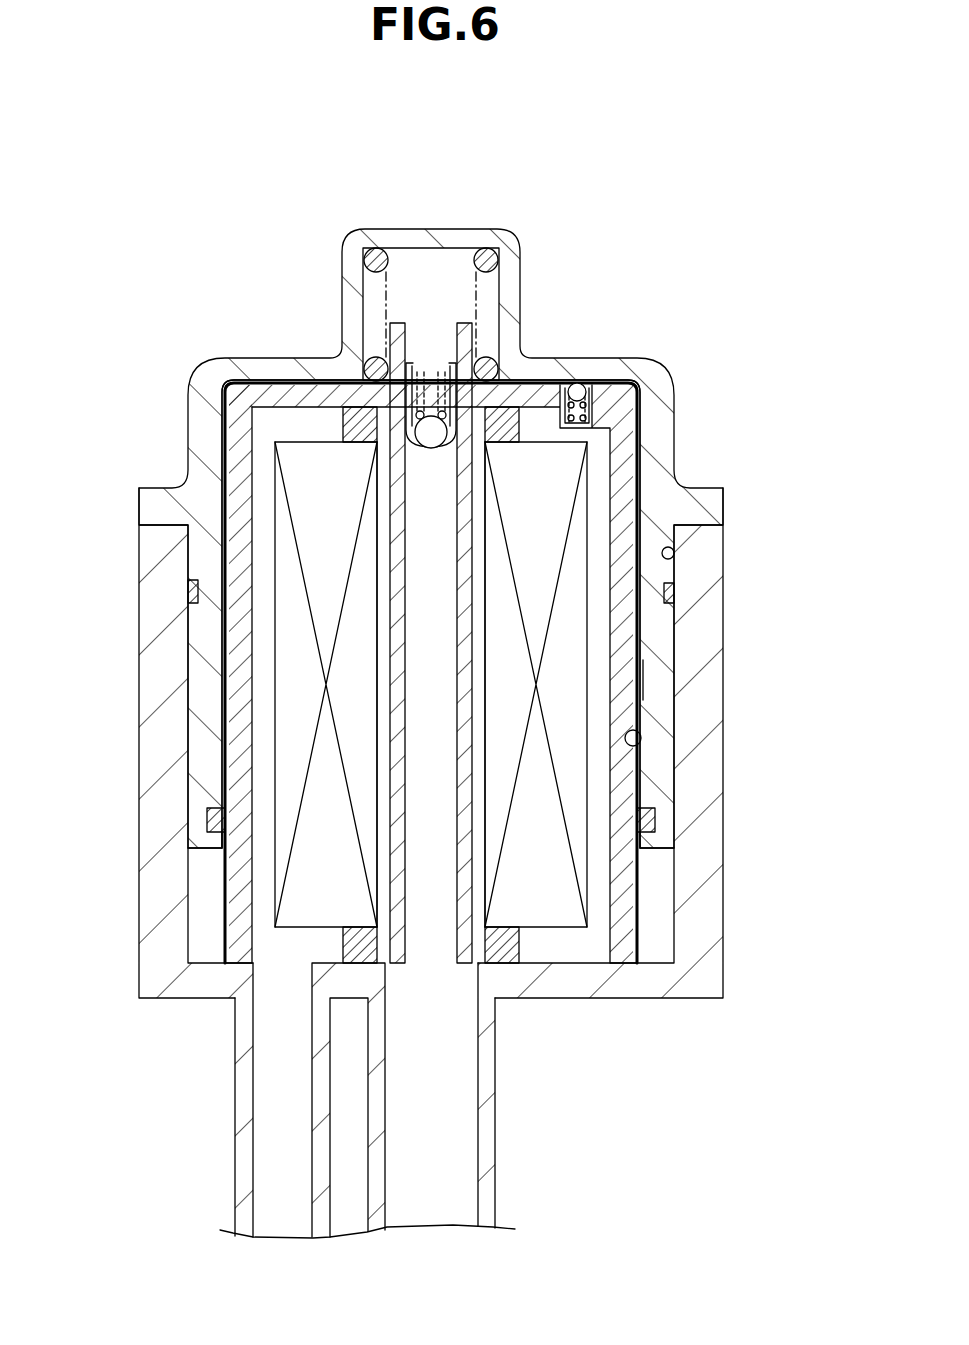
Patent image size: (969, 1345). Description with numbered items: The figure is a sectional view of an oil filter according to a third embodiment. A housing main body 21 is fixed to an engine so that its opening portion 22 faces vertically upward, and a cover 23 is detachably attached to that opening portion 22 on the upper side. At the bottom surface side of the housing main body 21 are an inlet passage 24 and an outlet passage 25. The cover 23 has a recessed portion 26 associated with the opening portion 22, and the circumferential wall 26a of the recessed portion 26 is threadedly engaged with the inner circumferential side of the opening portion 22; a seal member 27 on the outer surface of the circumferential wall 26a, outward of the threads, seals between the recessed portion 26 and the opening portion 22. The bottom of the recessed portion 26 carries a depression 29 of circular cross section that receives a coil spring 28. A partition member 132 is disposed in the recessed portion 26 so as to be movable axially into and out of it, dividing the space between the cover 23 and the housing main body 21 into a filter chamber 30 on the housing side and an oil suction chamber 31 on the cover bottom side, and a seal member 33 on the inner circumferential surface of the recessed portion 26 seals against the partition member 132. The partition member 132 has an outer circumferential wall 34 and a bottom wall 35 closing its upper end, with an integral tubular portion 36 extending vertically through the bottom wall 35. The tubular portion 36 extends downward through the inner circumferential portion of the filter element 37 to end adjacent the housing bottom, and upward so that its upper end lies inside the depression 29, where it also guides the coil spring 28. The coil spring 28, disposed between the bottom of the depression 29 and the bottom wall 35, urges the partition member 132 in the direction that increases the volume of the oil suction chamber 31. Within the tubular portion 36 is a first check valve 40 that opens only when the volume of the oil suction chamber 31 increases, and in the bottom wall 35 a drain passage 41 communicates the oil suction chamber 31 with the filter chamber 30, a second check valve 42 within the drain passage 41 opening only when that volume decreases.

The housing main body 21 is at (712, 583).
The opening portion 22 is at (674, 553).
The cover 23 is at (690, 450).
The inlet passage 24 is at (273, 1100).
The outlet passage 25 is at (455, 1102).
The recessed portion 26 is at (641, 739).
The circumferential wall 26a is at (657, 633).
The seal member 27 is at (188, 590).
The coil spring 28 is at (524, 256).
The depression 29 is at (433, 254).
The filter chamber 30 is at (252, 448).
The oil suction chamber 31 is at (347, 375).
The seal member 33 is at (657, 820).
The outer circumferential wall 34 is at (238, 718).
The bottom wall 35 is at (272, 395).
The tubular portion 36 is at (397, 862).
The filter element 37 is at (303, 900).
The first check valve 40 is at (433, 428).
The drain passage 41 is at (594, 410).
The second check valve 42 is at (576, 382).
The partition member 132 is at (646, 683).